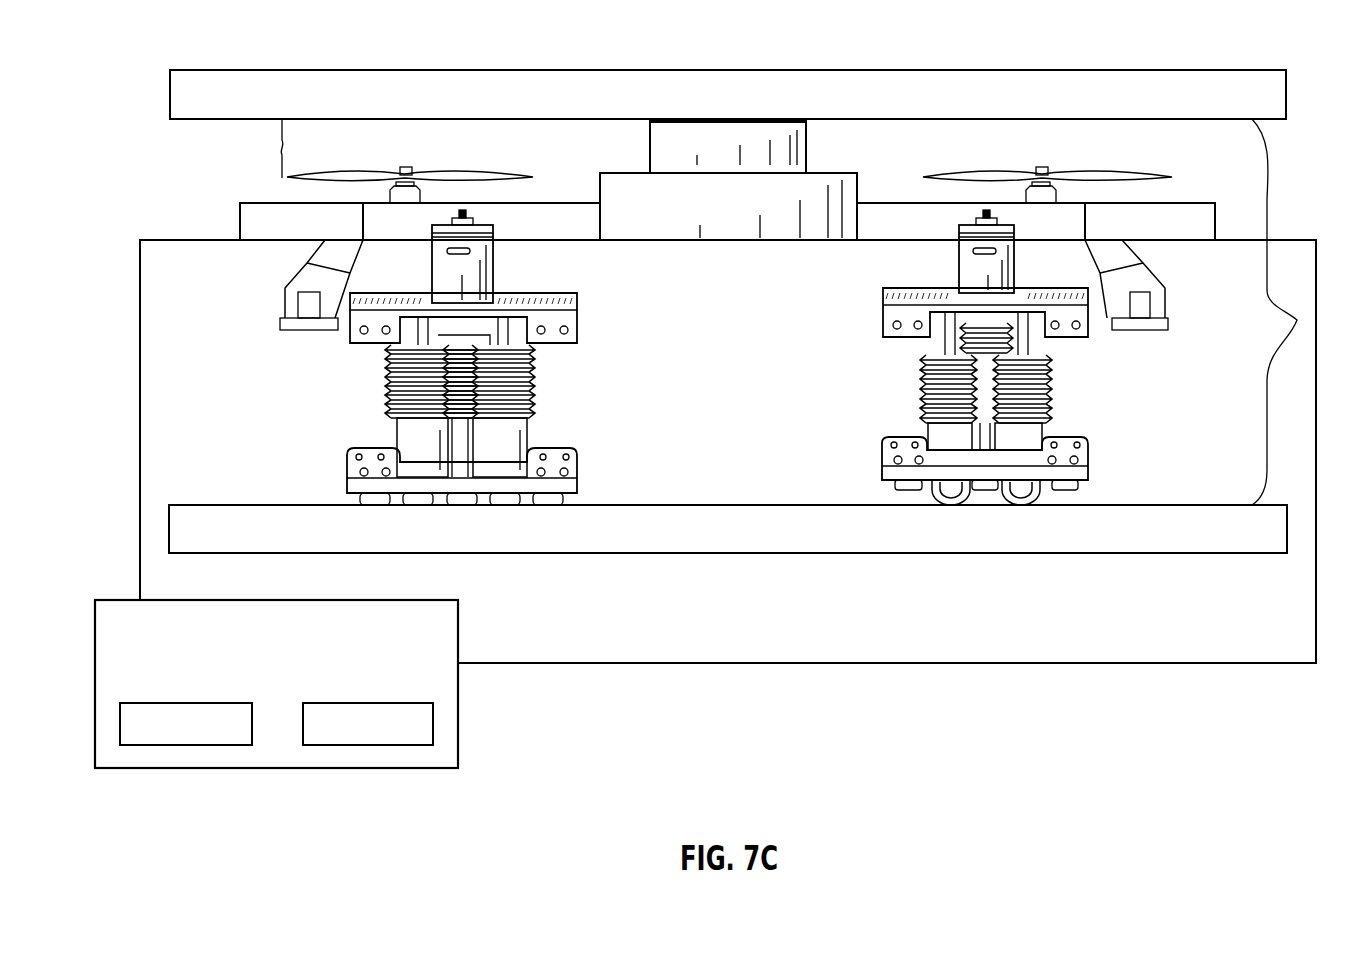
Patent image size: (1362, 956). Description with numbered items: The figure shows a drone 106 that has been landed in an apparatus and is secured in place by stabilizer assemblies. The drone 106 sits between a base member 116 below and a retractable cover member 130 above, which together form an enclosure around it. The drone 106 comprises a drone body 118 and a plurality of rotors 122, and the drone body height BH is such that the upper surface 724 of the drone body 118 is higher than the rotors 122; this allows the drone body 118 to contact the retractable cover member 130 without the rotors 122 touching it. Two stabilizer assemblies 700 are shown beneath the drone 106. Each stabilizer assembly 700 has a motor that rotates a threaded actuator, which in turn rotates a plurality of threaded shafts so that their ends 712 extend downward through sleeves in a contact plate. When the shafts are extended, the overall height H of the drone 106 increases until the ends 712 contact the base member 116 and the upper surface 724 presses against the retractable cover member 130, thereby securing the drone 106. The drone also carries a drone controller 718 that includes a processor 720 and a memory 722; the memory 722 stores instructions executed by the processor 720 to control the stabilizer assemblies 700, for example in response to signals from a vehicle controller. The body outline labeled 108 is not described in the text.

The retractable cover member 130 is at (1277, 97).
The drone body 118 is at (670, 138).
The upper surface 724 is at (748, 120).
The drone 106 is at (793, 170).
The rotor 122 is at (407, 167).
The UAV body 108 is at (165, 323).
The stabilizer assembly 700 is at (1163, 290).
The end 712 is at (1033, 505).
The base member 116 is at (925, 542).
The drone controller 718 is at (390, 600).
The processor 720 is at (187, 703).
The memory 722 is at (368, 703).
The drone body height BH is at (282, 144).
The overall height H is at (1297, 320).